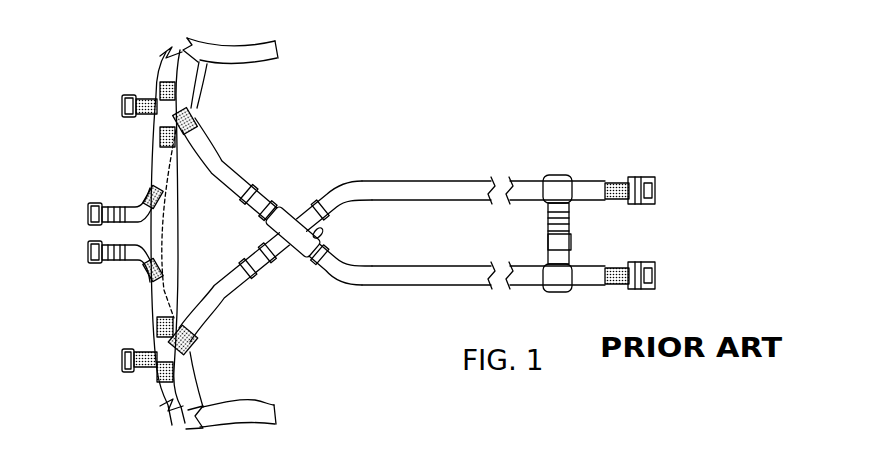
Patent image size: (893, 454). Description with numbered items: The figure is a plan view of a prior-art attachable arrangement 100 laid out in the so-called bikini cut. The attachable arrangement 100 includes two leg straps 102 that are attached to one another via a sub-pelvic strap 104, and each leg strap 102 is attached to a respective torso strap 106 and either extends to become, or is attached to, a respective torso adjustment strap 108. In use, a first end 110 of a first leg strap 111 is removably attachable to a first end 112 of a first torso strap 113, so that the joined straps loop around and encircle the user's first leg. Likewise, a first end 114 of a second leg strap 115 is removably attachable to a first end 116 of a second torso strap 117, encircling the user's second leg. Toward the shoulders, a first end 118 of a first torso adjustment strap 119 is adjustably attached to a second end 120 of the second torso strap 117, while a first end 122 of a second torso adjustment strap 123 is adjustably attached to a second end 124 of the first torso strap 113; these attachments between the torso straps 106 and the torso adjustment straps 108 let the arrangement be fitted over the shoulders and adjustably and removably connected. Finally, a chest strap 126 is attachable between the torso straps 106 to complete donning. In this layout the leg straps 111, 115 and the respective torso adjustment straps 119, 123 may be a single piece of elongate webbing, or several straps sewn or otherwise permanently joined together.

The attachable arrangement 100 is at (447, 105).
The leg straps 102 is at (88, 234).
The sub-pelvic strap 104 is at (168, 229).
The torso straps 106 is at (237, 139).
The torso adjustment straps 108 is at (263, 230).
The first end of first leg strap 110 is at (91, 203).
The first leg strap 111 is at (147, 188).
The first end of first torso strap 112 is at (122, 98).
The first torso strap 113 is at (194, 110).
The first end of second leg strap 114 is at (88, 264).
The second leg strap 115 is at (146, 276).
The first end of second torso strap 116 is at (122, 360).
The second torso strap 117 is at (193, 329).
The first end of first torso adjustment strap 118 is at (279, 44).
The first torso adjustment strap 119 is at (193, 85).
The second end of second torso strap 120 is at (640, 177).
The first end of second torso adjustment strap 122 is at (280, 404).
The second torso adjustment strap 123 is at (232, 410).
The second end of first torso strap 124 is at (653, 263).
The chest strap 126 is at (549, 239).